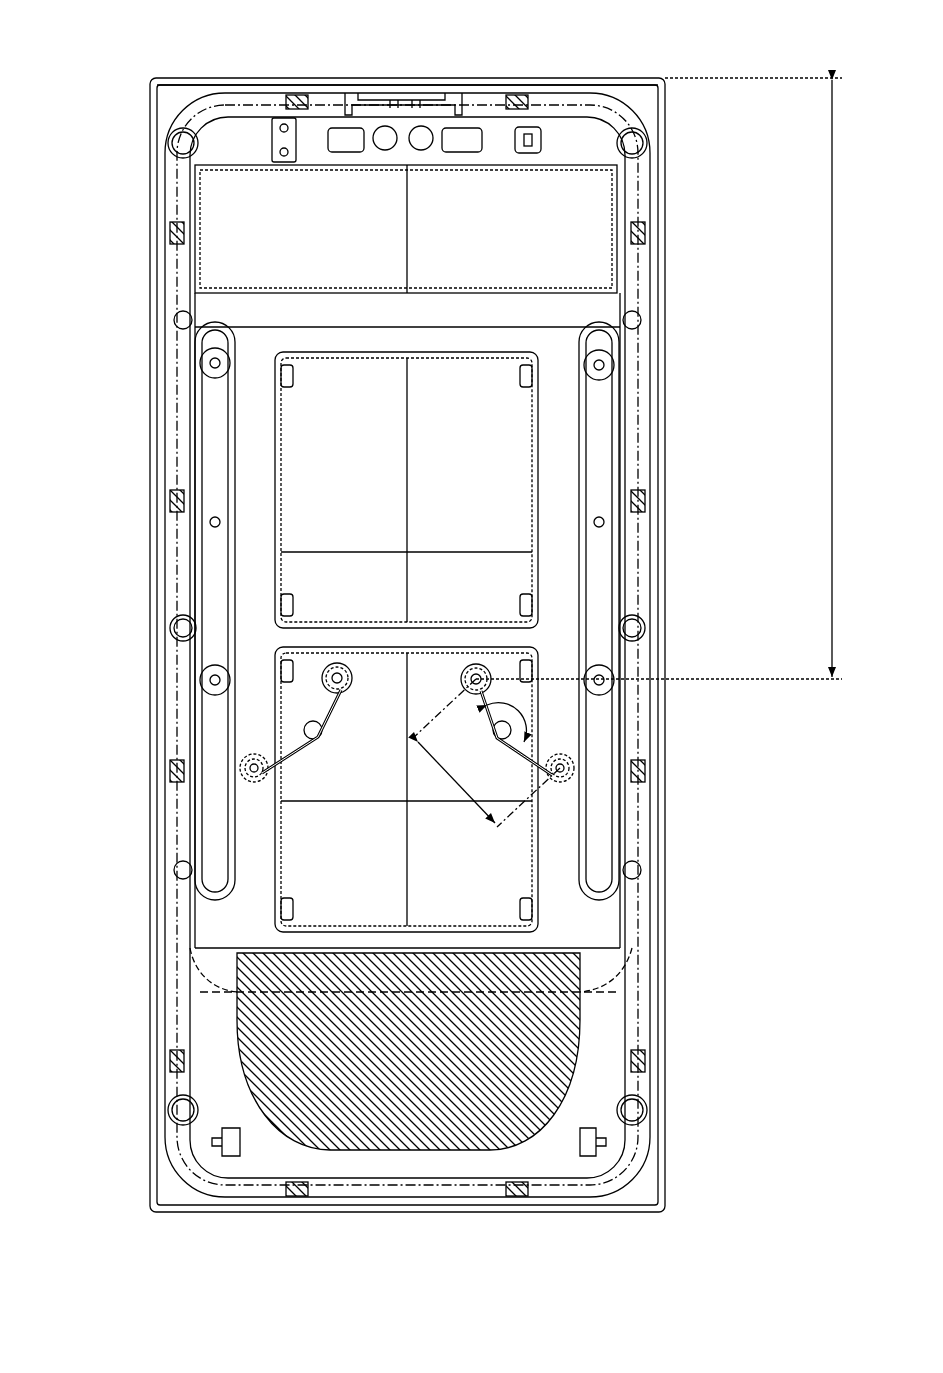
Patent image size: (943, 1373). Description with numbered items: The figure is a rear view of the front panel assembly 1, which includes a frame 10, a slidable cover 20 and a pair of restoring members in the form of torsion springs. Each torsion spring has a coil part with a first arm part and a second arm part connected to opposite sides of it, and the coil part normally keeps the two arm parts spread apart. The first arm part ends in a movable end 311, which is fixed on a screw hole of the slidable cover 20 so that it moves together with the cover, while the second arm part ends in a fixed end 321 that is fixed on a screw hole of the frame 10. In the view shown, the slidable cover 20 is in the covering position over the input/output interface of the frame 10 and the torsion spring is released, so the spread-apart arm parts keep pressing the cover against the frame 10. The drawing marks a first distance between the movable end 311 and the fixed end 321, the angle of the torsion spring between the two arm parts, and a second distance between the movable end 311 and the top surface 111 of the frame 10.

The front panel assembly 1 is at (93, 45).
The frame 10 is at (658, 153).
The top surface 111 is at (626, 78).
The slidable cover 20 is at (630, 187).
The movable end 311 is at (485, 677).
The fixed end 321 is at (568, 773).